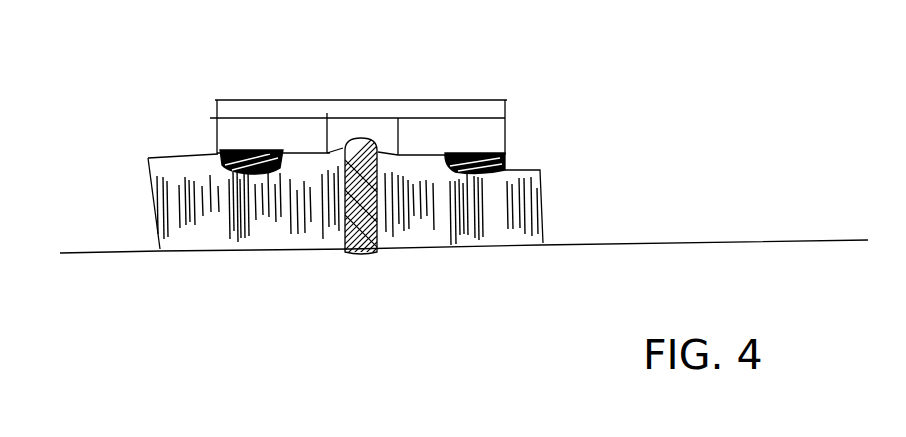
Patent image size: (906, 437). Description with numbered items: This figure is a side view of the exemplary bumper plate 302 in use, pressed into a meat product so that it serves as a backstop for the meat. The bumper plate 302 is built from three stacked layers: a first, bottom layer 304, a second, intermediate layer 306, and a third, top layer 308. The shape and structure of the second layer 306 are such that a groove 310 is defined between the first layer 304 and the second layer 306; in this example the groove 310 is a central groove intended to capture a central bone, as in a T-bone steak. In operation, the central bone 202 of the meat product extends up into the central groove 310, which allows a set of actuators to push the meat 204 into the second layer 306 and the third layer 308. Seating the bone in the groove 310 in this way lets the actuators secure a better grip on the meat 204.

The central bone 202 is at (363, 262).
The meat 204 is at (443, 262).
The bumper plate 302 is at (243, 97).
The first layer 304 is at (480, 110).
The second layer 306 is at (513, 130).
The third layer 308 is at (513, 157).
The groove 310 is at (340, 130).